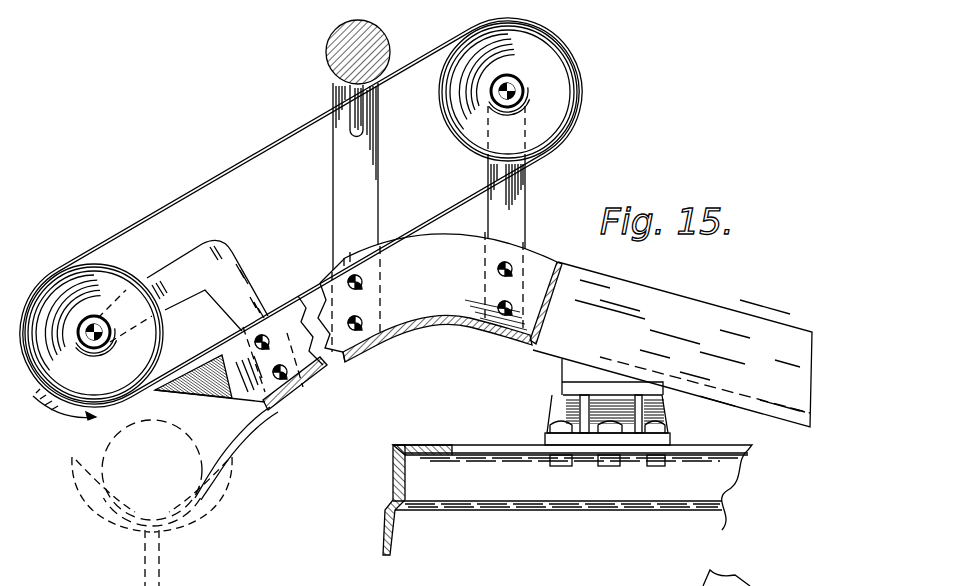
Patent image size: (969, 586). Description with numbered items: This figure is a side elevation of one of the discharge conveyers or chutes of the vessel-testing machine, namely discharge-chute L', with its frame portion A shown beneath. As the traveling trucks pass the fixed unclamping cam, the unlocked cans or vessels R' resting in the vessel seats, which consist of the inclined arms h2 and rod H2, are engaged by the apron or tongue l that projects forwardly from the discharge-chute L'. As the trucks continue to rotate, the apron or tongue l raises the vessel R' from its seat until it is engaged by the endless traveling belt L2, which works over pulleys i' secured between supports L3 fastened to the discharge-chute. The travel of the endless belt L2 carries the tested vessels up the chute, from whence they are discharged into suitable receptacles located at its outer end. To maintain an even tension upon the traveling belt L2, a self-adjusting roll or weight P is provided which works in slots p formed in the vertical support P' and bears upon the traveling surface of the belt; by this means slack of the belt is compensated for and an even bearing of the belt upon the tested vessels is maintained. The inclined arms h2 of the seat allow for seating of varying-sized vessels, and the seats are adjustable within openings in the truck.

The endless traveling belt L2 is at (183, 196).
The pulleys i' is at (318, 221).
The self-adjusting roll or weight P is at (345, 52).
The vertical support P' is at (368, 176).
The slots p is at (361, 117).
The supports L3 is at (506, 203).
The discharge-chute L' is at (565, 338).
The apron or tongue l is at (250, 427).
The cans or vessels R' is at (152, 473).
The inclined arms h2 is at (100, 503).
The rod H2 is at (148, 583).
The frame A is at (567, 515).